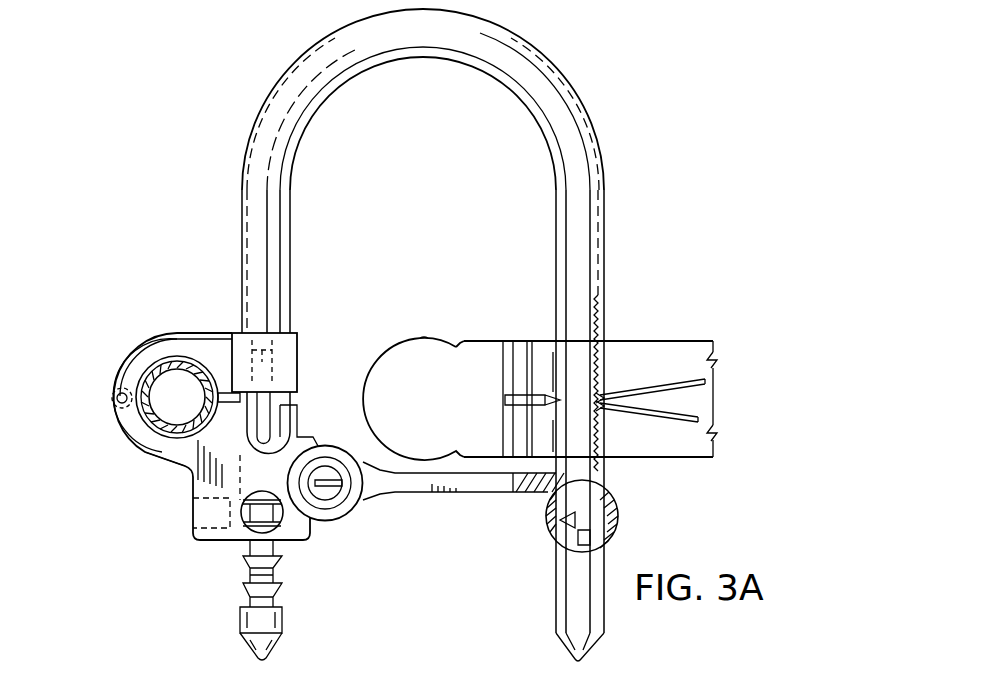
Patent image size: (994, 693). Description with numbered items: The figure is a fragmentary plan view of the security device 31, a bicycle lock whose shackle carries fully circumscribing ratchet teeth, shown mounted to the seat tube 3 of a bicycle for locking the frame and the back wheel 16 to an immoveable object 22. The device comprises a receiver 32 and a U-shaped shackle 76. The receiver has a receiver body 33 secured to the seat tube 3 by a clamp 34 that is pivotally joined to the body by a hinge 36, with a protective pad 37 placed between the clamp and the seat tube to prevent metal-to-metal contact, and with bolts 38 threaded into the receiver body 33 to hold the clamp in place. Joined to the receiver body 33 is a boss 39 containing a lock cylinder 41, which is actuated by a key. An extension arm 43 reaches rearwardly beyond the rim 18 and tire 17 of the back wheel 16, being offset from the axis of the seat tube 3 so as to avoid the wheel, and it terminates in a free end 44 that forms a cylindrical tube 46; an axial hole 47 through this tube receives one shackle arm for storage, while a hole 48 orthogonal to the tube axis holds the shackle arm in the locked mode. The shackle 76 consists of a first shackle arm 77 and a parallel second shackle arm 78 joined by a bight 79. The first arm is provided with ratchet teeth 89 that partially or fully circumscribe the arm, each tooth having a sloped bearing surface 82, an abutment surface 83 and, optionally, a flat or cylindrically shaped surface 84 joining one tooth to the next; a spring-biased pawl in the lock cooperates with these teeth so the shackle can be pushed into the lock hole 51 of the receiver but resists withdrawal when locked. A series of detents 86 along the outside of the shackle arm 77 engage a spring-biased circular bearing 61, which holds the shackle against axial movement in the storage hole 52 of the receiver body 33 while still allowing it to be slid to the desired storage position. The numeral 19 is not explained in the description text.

The seat tube 3 is at (173, 452).
The back wheel 16 is at (437, 334).
The tire 17 is at (402, 340).
The rim 18 is at (483, 340).
The retaining pin legs 19 is at (677, 388).
The immoveable object 22 is at (532, 133).
The security device 31 is at (206, 288).
The receiver 32 is at (121, 443).
The receiver body 33 is at (187, 468).
The clamp 34 is at (152, 347).
The hinge 36 is at (113, 392).
The protective pad 37 is at (175, 357).
The bolts 38 is at (263, 370).
The boss 39 is at (326, 487).
The lock cylinder 41 is at (330, 500).
The extension arm 43 is at (467, 498).
The free end 44 is at (618, 503).
The cylindrical tube 46 is at (615, 527).
The axial hole 47 is at (572, 520).
The hole 48 is at (590, 480).
The lock hole 51 is at (300, 437).
The storage hole 52 is at (277, 526).
The circular bearing 61 is at (220, 533).
The shackle 76 is at (606, 223).
The first shackle arm 77 is at (257, 240).
The second shackle arm 78 is at (590, 260).
The bight 79 is at (483, 33).
The sloped bearing surface 82 is at (247, 592).
The abutment surface 83 is at (280, 573).
The flat or cylindrically shaped surface 84 is at (250, 575).
The detents 86 is at (602, 318).
The ratchet teeth 89 is at (286, 598).